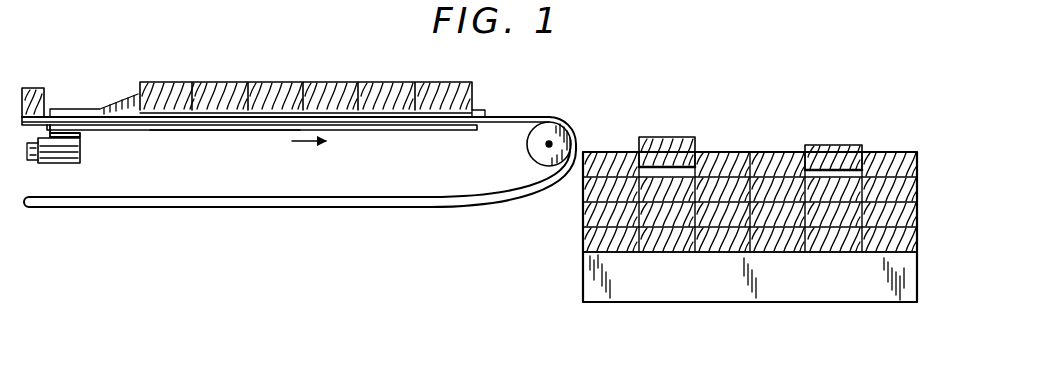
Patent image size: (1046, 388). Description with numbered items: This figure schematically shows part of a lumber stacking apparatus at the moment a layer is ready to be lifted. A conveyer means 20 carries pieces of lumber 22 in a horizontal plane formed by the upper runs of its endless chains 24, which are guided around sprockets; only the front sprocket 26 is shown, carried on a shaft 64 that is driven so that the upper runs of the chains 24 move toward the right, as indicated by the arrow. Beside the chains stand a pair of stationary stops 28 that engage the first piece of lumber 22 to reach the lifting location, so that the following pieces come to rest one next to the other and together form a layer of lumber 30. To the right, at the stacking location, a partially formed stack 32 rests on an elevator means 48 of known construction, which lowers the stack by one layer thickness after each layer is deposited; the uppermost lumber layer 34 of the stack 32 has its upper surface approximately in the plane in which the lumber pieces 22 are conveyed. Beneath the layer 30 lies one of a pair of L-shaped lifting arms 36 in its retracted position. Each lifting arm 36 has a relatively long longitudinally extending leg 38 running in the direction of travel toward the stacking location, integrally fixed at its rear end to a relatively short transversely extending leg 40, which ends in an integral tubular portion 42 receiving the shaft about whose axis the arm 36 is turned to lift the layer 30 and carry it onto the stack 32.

The conveyer means 20 is at (470, 210).
The pieces of lumber 22 is at (36, 88).
The endless chains 24 is at (516, 118).
The front sprocket 26 is at (530, 155).
The stationary stops 28 is at (484, 107).
The layer of lumber 30 is at (374, 63).
The partially formed stack 32 is at (757, 227).
The uppermost lumber layer 34 is at (931, 133).
The lifting arm 36 is at (221, 133).
The longitudinally extending leg 38 is at (396, 131).
The transversely extending leg 40 is at (82, 137).
The tubular portion 42 is at (54, 164).
The elevator means 48 is at (800, 294).
The shaft 64 is at (550, 140).